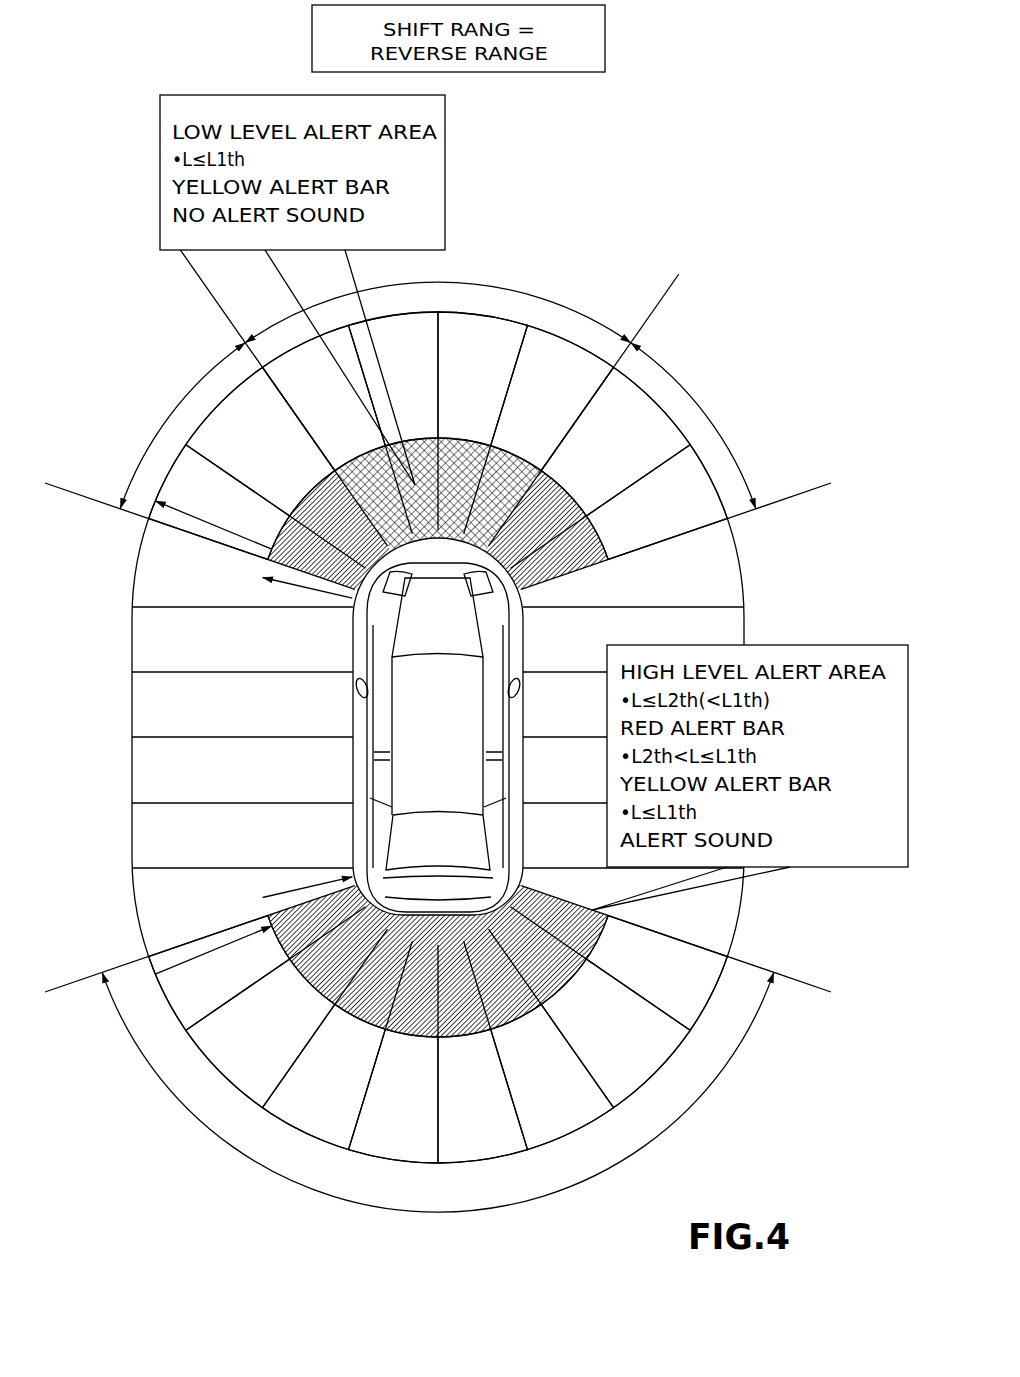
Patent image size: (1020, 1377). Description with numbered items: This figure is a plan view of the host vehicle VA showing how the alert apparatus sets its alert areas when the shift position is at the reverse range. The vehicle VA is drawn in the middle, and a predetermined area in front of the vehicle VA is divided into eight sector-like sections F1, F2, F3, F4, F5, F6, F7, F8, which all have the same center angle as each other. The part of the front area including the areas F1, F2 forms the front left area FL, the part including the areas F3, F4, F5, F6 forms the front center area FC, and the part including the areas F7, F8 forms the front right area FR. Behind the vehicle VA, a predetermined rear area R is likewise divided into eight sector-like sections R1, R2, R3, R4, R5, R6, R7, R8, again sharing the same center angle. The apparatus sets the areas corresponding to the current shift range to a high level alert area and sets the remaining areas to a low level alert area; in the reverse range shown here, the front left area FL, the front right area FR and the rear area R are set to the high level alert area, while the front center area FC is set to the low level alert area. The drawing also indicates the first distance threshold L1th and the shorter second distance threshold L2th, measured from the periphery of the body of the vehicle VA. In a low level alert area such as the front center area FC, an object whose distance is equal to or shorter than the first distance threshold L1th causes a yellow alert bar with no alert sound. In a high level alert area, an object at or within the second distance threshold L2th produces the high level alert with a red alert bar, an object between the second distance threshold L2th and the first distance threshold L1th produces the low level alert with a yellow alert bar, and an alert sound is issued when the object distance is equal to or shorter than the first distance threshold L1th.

The front left area FL is at (165, 403).
The front center area FC is at (483, 284).
The front right area FR is at (723, 404).
The rear area R is at (437, 1218).
The area F1 is at (219, 502).
The area F2 is at (260, 441).
The area F3 is at (324, 397).
The area F4 is at (394, 379).
The area F5 is at (483, 379).
The area F6 is at (552, 397).
The area F7 is at (615, 441).
The area F8 is at (656, 502).
The area R1 is at (219, 973).
The area R2 is at (260, 1033).
The area R3 is at (324, 1076).
The area R4 is at (394, 1096).
The area R5 is at (483, 1096).
The area R6 is at (552, 1076).
The area R7 is at (615, 1033).
The area R8 is at (656, 973).
The first distance threshold L1th is at (213, 740).
The second distance threshold L2th is at (308, 738).
The vehicle VA is at (352, 714).